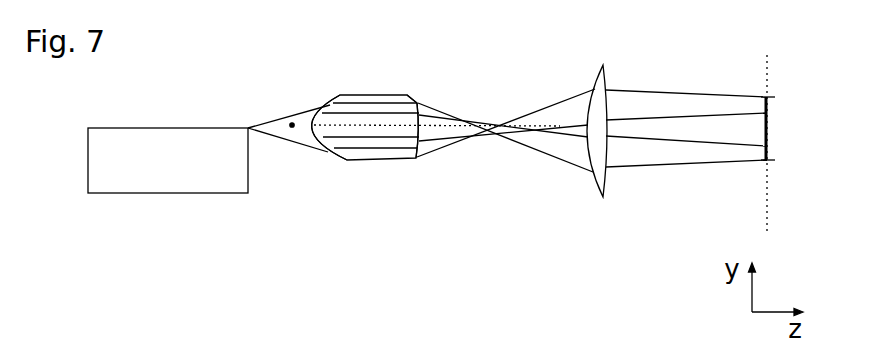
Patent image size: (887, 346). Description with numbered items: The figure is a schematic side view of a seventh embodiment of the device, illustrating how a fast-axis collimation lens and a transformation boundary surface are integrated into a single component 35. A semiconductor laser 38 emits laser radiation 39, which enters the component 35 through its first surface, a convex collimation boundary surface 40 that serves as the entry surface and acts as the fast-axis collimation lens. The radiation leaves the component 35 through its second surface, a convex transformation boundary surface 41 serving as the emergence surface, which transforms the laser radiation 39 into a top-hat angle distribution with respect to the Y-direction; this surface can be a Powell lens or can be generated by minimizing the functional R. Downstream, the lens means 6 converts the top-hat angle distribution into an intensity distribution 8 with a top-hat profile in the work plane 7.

The semiconductor laser 38 is at (167, 193).
The laser radiation 39 is at (291, 128).
The convex collimation boundary surface 40 is at (322, 108).
The convex transformation boundary surface 41 is at (418, 102).
The component 35 is at (382, 160).
The lens means 6 is at (600, 182).
The work plane 7 is at (762, 70).
The intensity distribution 8 is at (772, 133).